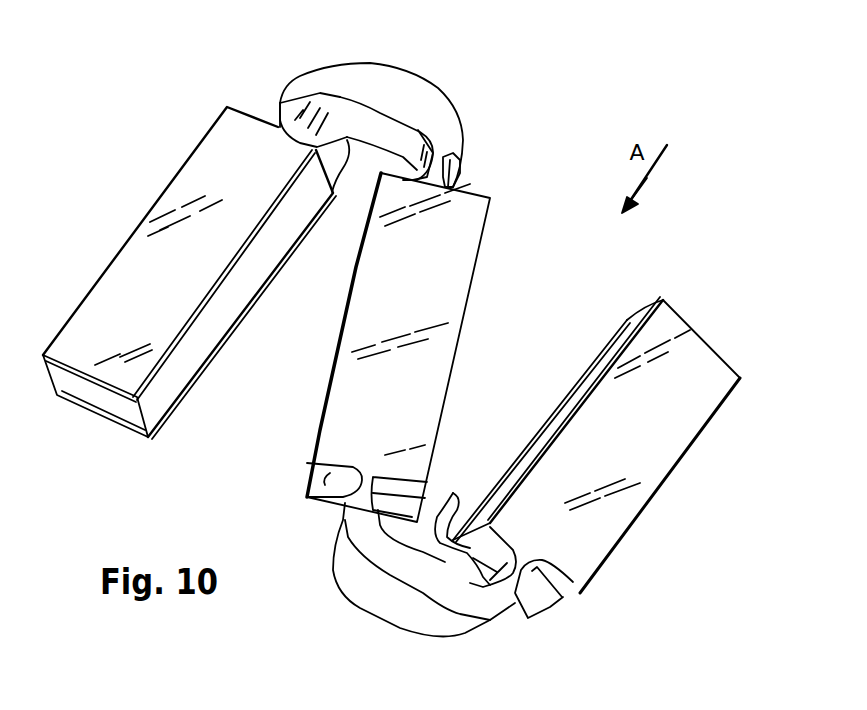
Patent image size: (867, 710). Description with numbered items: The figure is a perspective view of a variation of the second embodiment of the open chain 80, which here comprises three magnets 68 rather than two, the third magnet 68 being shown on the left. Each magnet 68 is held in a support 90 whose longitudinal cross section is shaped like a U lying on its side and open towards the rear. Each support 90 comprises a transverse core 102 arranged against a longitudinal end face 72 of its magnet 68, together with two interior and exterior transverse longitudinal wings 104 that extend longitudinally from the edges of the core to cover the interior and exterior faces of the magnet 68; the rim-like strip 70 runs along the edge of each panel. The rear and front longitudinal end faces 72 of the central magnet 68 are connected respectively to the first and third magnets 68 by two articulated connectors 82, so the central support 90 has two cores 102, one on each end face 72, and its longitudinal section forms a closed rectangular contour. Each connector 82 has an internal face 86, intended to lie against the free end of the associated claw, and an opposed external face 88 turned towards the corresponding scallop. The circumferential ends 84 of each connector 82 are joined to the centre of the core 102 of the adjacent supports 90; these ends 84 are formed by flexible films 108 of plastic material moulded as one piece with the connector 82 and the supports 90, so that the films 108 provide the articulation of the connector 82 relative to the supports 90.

The magnet 68 is at (173, 387).
The rim strip of panel 70 is at (193, 343).
The longitudinal end face 72 is at (100, 417).
The open chain 80 is at (146, 170).
The connector 82 is at (417, 85).
The circumferential end 84 is at (277, 124).
The internal face 86 is at (393, 137).
The external face 88 is at (363, 577).
The support 90 is at (133, 298).
The transverse core 102 is at (343, 160).
The transverse longitudinal wing 104 is at (93, 327).
The film of plastic material 108 is at (310, 117).